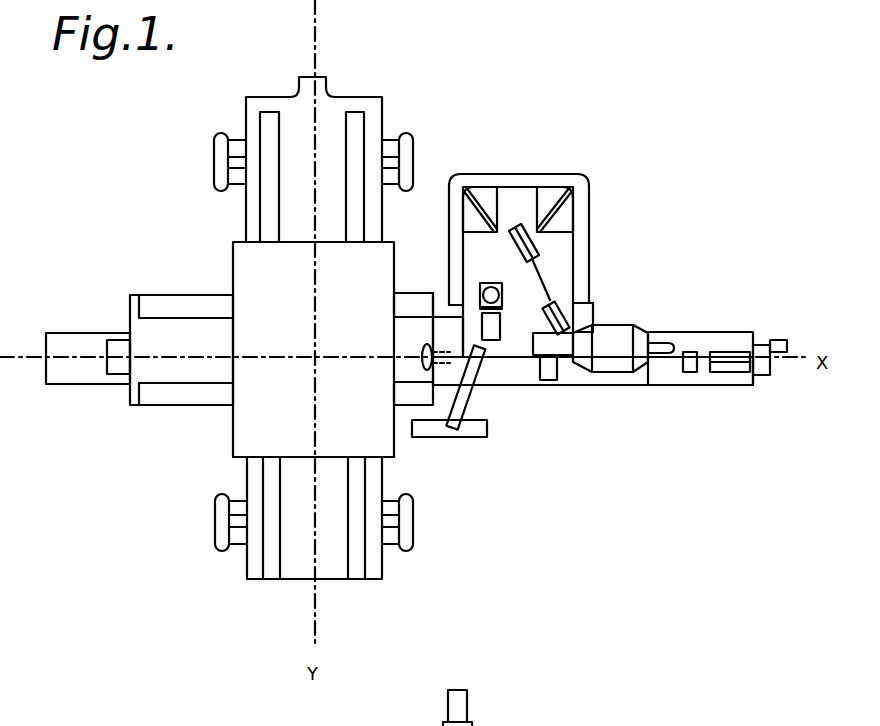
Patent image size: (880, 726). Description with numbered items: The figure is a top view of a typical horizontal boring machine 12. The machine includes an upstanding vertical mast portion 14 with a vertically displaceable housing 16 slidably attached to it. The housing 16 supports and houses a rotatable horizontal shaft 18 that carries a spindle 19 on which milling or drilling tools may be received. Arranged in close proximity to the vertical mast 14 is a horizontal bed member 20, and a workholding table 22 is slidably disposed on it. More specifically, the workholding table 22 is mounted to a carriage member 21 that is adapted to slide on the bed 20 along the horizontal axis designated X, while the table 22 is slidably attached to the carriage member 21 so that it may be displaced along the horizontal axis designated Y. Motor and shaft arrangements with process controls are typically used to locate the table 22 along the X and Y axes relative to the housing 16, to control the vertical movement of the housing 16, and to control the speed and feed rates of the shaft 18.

The horizontal boring machine 12 is at (550, 393).
The vertical mast portion 14 is at (583, 253).
The vertically displaceable housing 16 is at (452, 328).
The rotatable horizontal shaft 18 is at (455, 368).
The spindle 19 is at (422, 357).
The horizontal bed member 20 is at (190, 330).
The carriage member 21 is at (336, 104).
The workholding table 22 is at (290, 305).